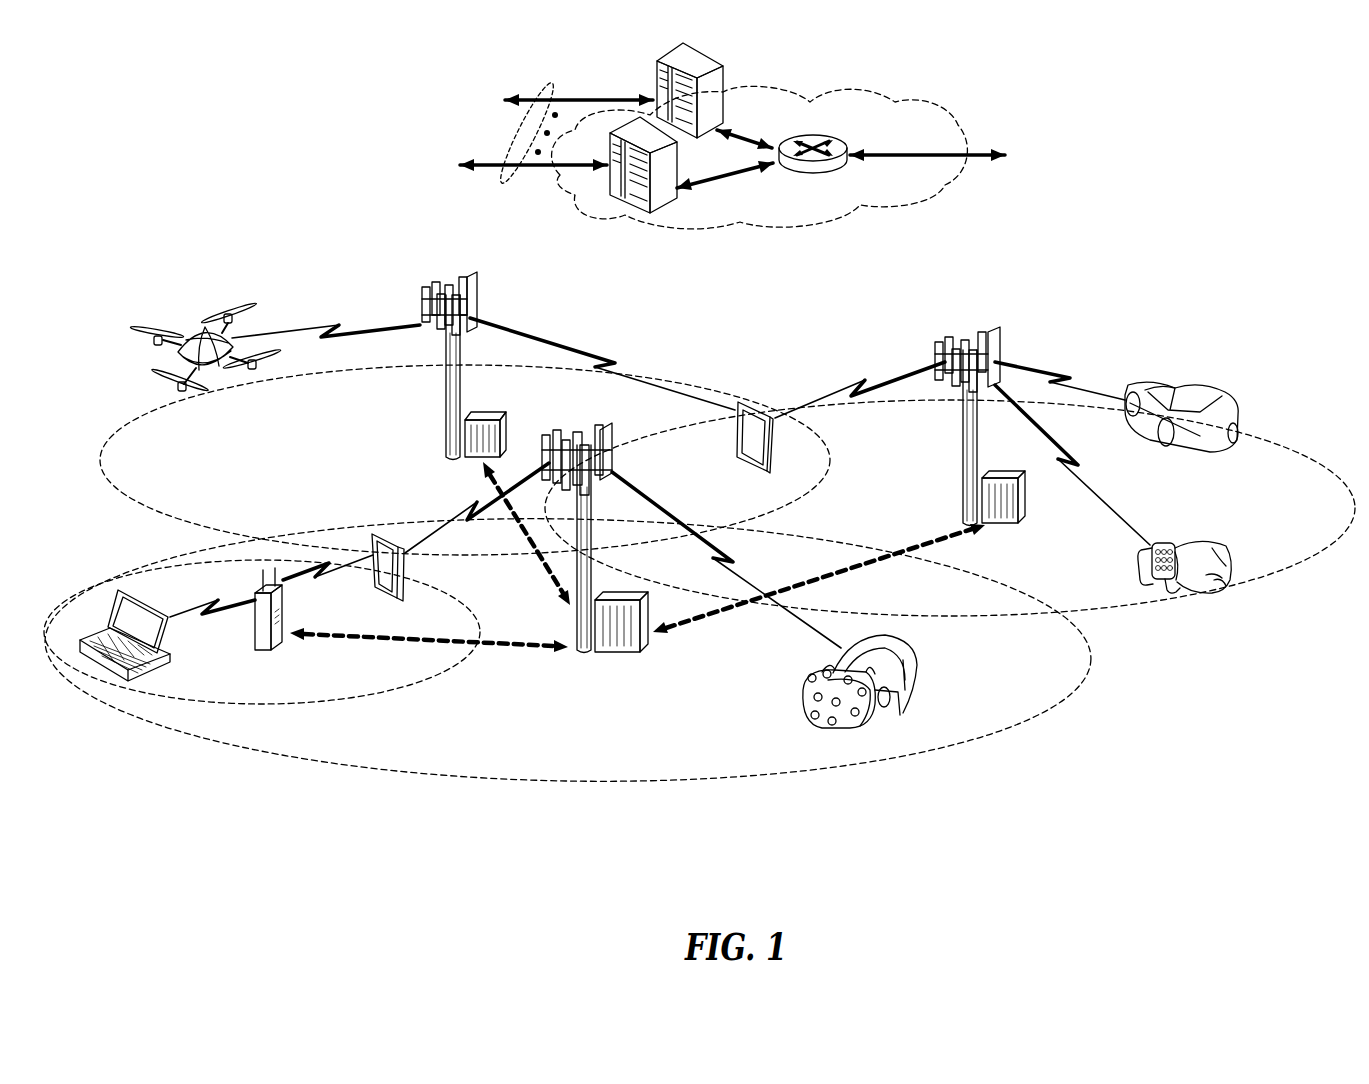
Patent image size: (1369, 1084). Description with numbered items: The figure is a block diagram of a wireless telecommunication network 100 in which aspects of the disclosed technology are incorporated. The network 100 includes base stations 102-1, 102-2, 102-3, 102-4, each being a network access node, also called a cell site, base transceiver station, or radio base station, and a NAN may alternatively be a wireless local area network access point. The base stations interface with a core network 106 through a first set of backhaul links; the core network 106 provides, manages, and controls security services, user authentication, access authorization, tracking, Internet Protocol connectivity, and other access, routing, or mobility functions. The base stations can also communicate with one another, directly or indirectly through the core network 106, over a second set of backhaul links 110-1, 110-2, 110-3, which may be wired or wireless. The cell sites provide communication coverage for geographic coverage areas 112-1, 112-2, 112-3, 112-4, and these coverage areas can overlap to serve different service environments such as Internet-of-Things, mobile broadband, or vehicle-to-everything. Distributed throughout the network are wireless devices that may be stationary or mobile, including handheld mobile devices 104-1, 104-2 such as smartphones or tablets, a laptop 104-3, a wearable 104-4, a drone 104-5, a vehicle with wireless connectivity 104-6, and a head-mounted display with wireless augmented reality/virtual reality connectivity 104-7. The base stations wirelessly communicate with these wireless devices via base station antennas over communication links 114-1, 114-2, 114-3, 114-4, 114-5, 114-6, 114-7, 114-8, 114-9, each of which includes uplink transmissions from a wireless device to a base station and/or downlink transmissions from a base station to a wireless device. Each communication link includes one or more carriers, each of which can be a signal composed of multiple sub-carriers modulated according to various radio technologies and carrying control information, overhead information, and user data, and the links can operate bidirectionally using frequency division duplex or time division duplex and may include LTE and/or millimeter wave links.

The wireless telecommunication network 100 is at (1252, 146).
The core network 106 is at (840, 222).
The base station 102-1 is at (580, 655).
The base station 102-2 is at (440, 405).
The base station 102-3 is at (960, 442).
The base station 102-4 is at (250, 640).
The handheld mobile device 104-1 is at (410, 578).
The handheld mobile device 104-2 is at (733, 440).
The laptop 104-3 is at (105, 675).
The wearable 104-4 is at (1170, 540).
The drone 104-5 is at (217, 375).
The vehicle with wireless connectivity 104-6 is at (1205, 395).
The head-mounted display with wireless AR/VR connectivity 104-7 is at (920, 668).
The backhaul link 110-1 is at (322, 637).
The backhaul link 110-2 is at (885, 565).
The backhaul link 110-3 is at (545, 565).
The geographic coverage area 112-1 is at (510, 782).
The geographic coverage area 112-2 is at (385, 695).
The geographic coverage area 112-3 is at (165, 520).
The geographic coverage area 112-4 is at (1265, 440).
The communication link 114-1 is at (740, 565).
The communication link 114-2 is at (476, 503).
The communication link 114-3 is at (183, 612).
The communication link 114-4 is at (322, 582).
The communication link 114-5 is at (330, 327).
The communication link 114-6 is at (613, 365).
The communication link 114-7 is at (858, 388).
The communication link 114-8 is at (1097, 487).
The communication link 114-9 is at (1057, 372).